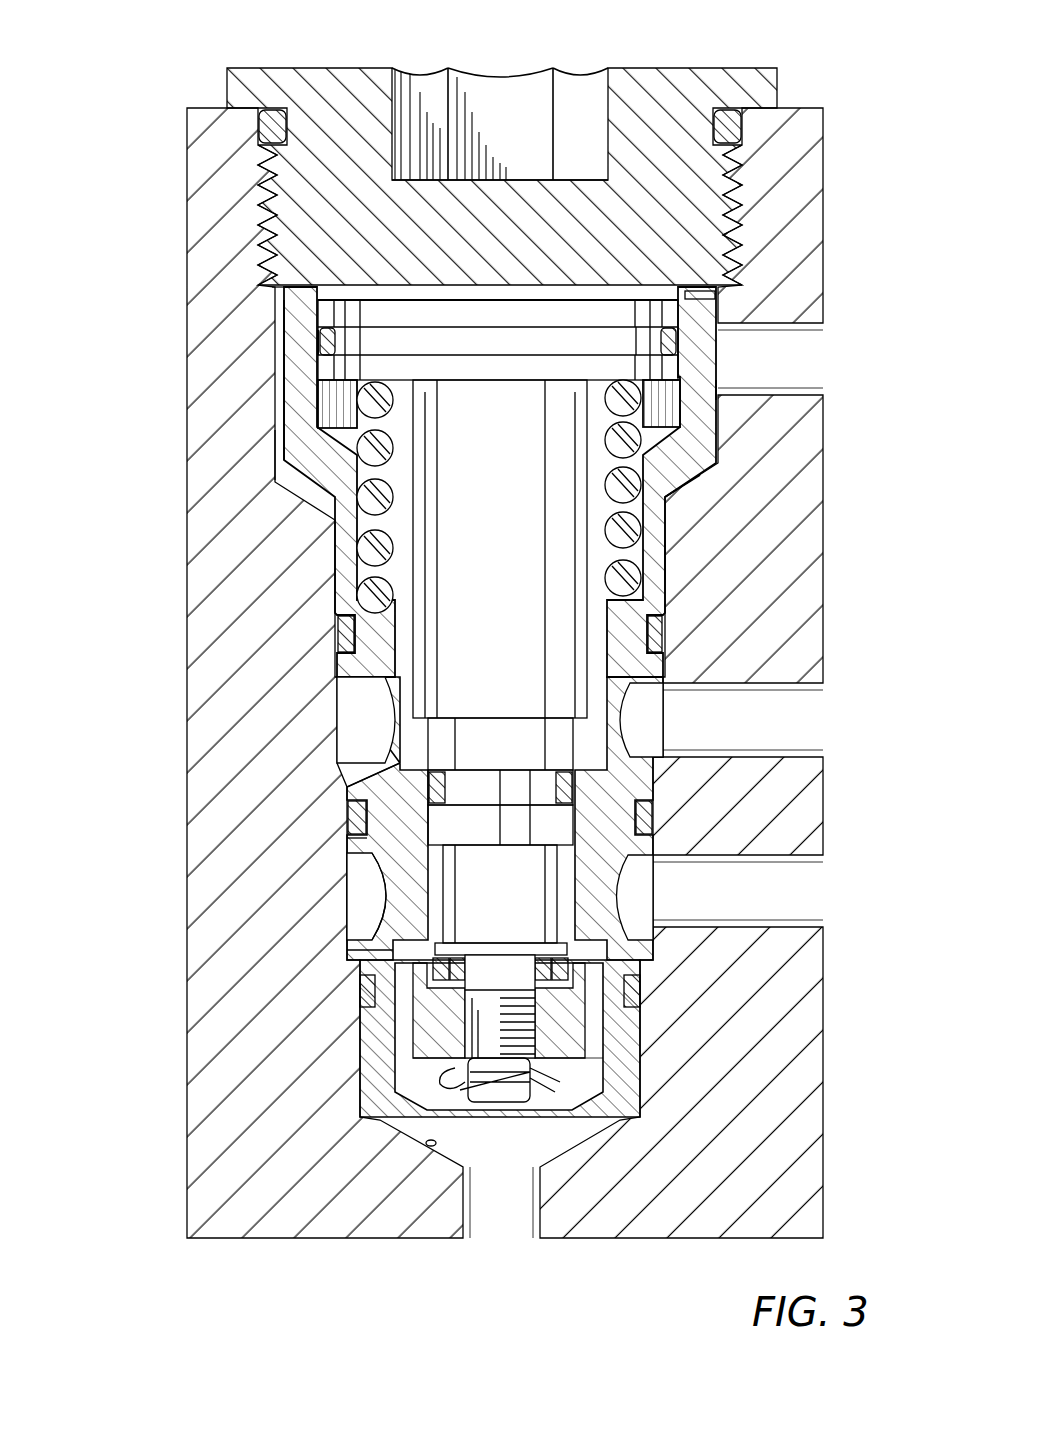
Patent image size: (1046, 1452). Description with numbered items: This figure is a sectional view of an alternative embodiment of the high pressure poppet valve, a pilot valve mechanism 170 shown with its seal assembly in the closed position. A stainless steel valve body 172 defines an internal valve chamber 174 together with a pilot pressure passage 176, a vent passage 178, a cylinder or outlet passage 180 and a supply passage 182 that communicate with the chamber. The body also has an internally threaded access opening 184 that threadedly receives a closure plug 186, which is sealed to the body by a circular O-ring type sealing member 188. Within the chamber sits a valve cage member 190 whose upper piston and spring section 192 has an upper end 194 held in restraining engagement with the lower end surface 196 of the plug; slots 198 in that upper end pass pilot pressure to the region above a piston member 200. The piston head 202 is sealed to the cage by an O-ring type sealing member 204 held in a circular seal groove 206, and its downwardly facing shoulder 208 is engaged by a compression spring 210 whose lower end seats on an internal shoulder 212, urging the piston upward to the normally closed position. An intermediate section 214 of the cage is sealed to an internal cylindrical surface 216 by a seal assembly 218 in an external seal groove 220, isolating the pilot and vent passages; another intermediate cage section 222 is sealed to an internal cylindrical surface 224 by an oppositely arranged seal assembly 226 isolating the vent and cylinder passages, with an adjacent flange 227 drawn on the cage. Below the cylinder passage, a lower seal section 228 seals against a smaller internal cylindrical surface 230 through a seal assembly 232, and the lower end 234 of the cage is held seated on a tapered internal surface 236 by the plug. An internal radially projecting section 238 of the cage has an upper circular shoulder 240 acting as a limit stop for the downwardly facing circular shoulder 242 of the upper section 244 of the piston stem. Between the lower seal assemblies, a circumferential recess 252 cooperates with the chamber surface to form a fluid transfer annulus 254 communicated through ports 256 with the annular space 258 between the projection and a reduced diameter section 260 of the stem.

The pilot valve mechanism 170 is at (160, 83).
The valve body 172 is at (205, 634).
The internal valve chamber 174 is at (330, 495).
The pilot pressure passage 176 is at (745, 335).
The vent passage 178 is at (790, 693).
The cylinder or outlet passage 180 is at (780, 863).
The supply passage 182 is at (518, 1230).
The internally threaded access opening 184 is at (262, 163).
The closure plug 186 is at (650, 85).
The O-ring seal 188 is at (736, 112).
The valve cage member 190 is at (276, 392).
The upper piston and spring section 192 is at (272, 447).
The upper end 194 is at (268, 288).
The lower end surface 196 is at (598, 300).
The slots 198 is at (692, 296).
The piston member 200 is at (415, 298).
The piston head 202 is at (495, 316).
The O-ring type sealing member 204 is at (317, 345).
The circular seal groove 206 is at (355, 326).
The downwardly facing shoulder 208 is at (720, 392).
The compression spring 210 is at (667, 478).
The internal shoulder 212 is at (662, 560).
The intermediate section 214 is at (352, 605).
The internal cylindrical surface 216 is at (345, 700).
The seal assembly 218 is at (340, 637).
The external seal groove 220 is at (665, 632).
The intermediate cage section 222 is at (345, 825).
The internal cylindrical surface 224 is at (345, 878).
The seal assembly 226 is at (350, 850).
The flange 227 is at (620, 720).
The lower seal section 228 is at (372, 990).
The internal cylindrical surface 230 is at (360, 1048).
The seal assembly 232 is at (357, 982).
The lower end 234 is at (365, 1100).
The tapered internal surface 236 is at (428, 1145).
The internal radially projecting section 238 is at (353, 800).
The upper circular shoulder 240 is at (343, 745).
The downwardly facing circular shoulder 242 is at (472, 722).
The upper section of piston stem 244 is at (425, 542).
The circumferential recess 252 is at (352, 955).
The fluid transfer annulus 254 is at (365, 915).
The ports 256 is at (610, 918).
The annular space 258 is at (570, 885).
The reduced diameter section 260 is at (565, 858).